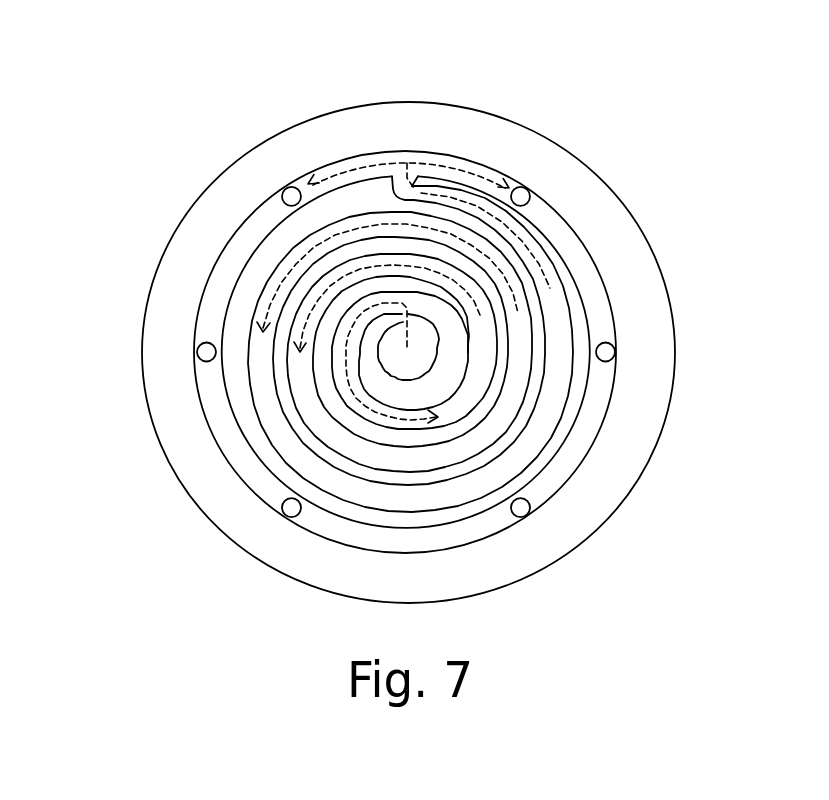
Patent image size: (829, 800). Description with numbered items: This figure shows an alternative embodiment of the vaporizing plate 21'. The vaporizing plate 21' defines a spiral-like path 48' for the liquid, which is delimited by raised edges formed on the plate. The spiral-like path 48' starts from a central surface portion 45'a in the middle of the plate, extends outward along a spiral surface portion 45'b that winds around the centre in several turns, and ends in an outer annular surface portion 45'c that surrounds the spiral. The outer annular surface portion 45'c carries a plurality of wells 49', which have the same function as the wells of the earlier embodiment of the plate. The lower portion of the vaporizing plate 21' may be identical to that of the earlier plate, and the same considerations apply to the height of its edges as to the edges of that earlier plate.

The vaporizing plate 21' is at (393, 301).
The spiral-like path 48' is at (341, 280).
The wells 49' is at (333, 352).
The central surface portion 45'a is at (247, 384).
The spiral surface portion 45'b is at (322, 344).
The outer annular surface portion 45'c is at (355, 352).